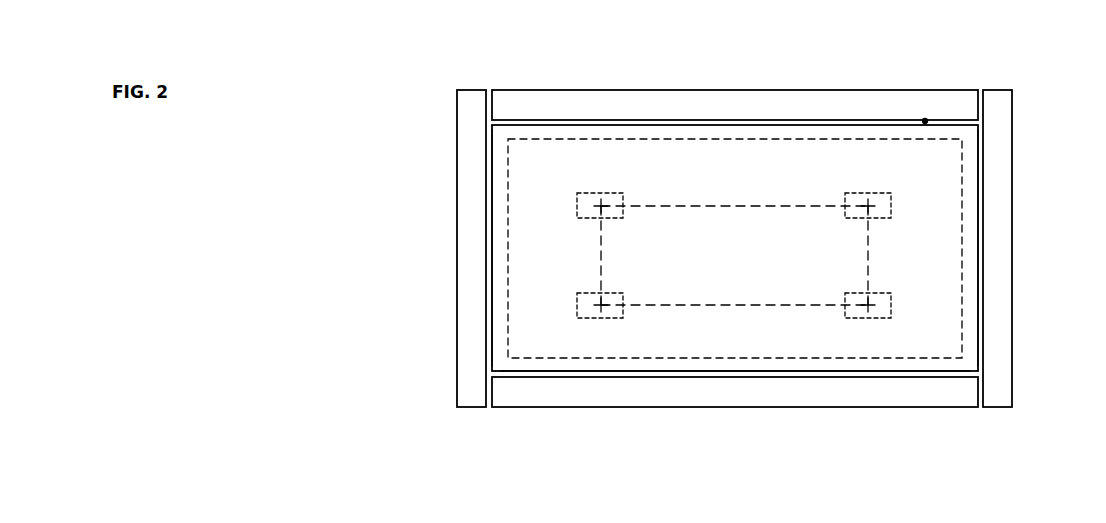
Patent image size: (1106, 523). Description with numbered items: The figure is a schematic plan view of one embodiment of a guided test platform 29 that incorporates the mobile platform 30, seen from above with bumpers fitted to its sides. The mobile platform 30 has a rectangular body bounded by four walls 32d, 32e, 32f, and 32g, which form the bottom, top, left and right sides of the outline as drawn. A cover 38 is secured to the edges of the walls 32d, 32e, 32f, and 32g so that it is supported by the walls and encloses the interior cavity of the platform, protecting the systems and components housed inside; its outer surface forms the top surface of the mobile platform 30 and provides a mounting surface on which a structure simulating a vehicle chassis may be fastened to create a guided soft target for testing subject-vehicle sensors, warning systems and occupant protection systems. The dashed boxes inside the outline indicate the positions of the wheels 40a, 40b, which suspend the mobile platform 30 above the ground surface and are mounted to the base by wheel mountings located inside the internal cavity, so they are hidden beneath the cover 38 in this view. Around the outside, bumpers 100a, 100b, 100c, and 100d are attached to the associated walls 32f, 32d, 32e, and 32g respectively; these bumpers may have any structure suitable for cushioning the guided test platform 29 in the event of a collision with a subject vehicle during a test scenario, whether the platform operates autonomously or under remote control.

The guided test platform 29 is at (1095, 255).
The mobile platform 30 is at (925, 120).
The wall 32d is at (806, 360).
The wall 32e is at (800, 130).
The wall 32f is at (500, 167).
The wall 32g is at (968, 200).
The cover 38 is at (556, 176).
The wheel 40a is at (618, 220).
The wheel 40b is at (843, 213).
The bumper 100a is at (472, 318).
The bumper 100b is at (637, 393).
The bumper 100c is at (632, 105).
The bumper 100d is at (1039, 248).